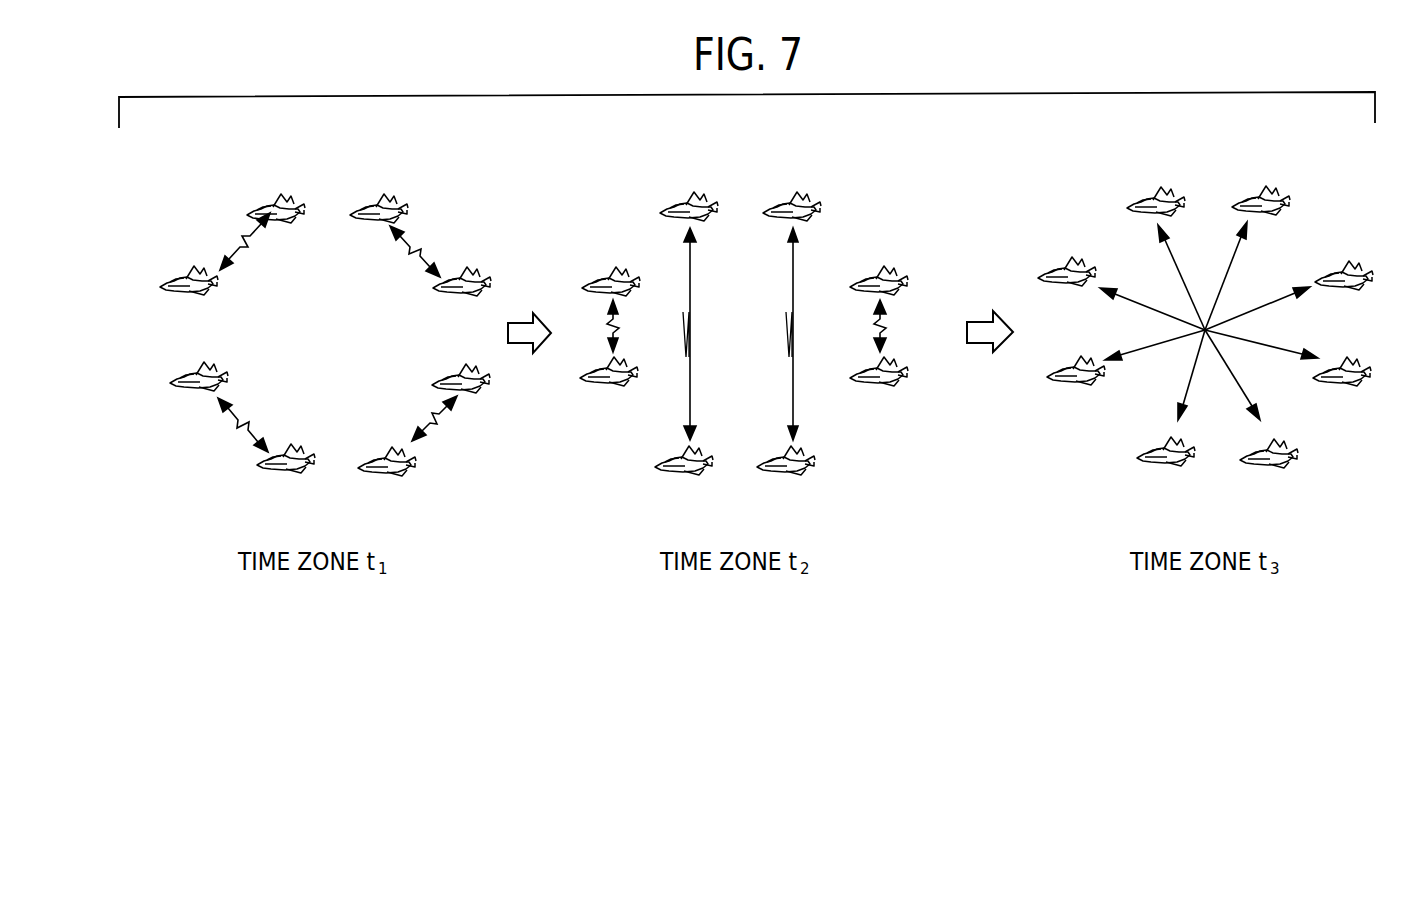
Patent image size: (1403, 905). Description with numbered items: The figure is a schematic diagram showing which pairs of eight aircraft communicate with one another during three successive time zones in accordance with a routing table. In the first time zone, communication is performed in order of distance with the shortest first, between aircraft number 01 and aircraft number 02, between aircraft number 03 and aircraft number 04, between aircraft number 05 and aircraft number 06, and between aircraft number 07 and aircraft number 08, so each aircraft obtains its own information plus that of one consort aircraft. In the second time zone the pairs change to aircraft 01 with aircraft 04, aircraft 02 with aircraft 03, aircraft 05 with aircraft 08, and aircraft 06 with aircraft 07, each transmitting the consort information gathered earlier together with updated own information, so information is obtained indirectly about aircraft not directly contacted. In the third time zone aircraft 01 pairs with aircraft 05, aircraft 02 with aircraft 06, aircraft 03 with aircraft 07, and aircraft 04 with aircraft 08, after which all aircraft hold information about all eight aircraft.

The aircraft number # 01 is at (265, 196).
The aircraft number # 02 is at (183, 272).
The aircraft number # 03 is at (190, 372).
The aircraft number # 04 is at (260, 465).
The aircraft number # 05 is at (368, 482).
The aircraft number # 06 is at (470, 398).
The aircraft number # 07 is at (458, 270).
The aircraft number # 08 is at (370, 196).